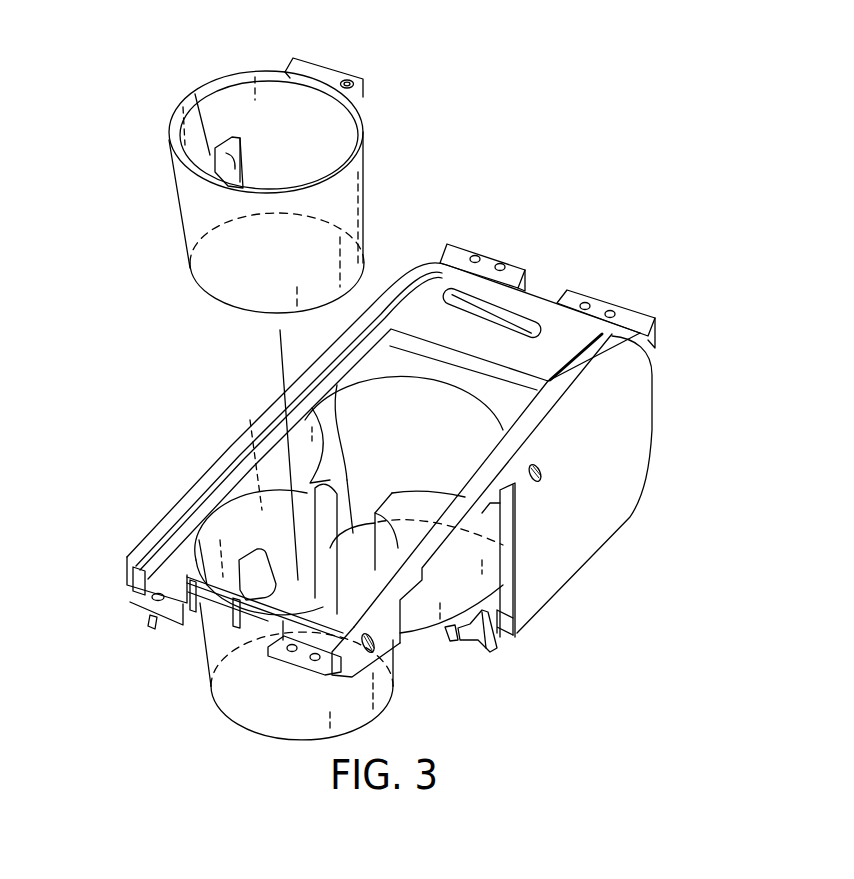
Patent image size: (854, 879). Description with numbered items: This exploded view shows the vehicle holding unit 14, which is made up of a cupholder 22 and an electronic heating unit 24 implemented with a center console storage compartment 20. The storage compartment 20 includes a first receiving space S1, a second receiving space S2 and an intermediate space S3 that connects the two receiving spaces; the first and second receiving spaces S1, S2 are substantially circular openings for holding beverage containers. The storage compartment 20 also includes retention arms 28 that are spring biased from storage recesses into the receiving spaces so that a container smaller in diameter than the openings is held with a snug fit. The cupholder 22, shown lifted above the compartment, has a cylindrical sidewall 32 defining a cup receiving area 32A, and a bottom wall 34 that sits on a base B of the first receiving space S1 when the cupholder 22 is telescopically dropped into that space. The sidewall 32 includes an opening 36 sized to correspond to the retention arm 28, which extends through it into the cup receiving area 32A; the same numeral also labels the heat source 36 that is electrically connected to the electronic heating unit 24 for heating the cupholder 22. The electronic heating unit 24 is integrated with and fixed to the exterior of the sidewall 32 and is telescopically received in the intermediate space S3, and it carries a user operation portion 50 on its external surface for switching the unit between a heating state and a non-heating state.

The vehicle holding unit 14 is at (585, 112).
The storage compartment 20 is at (173, 450).
The cupholder 22 is at (184, 95).
The electronic heating unit 24 is at (322, 70).
The retention arm 28 is at (258, 569).
The sidewall 32 is at (177, 183).
The cup receiving area 32A is at (322, 143).
The bottom wall 34 is at (222, 312).
The opening 36 is at (232, 165).
The user operation portion 50 is at (352, 78).
The base B is at (232, 698).
The first receiving space S1 is at (236, 528).
The second receiving space S2 is at (410, 418).
The intermediate space S3 is at (360, 500).